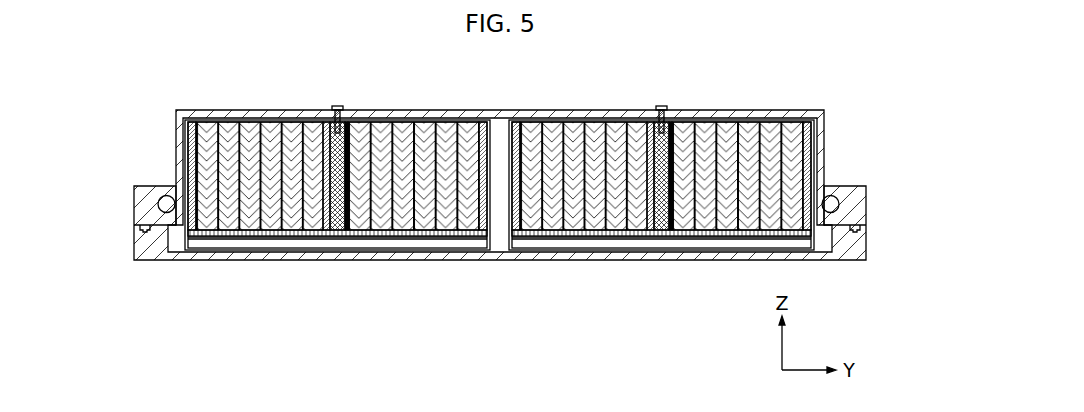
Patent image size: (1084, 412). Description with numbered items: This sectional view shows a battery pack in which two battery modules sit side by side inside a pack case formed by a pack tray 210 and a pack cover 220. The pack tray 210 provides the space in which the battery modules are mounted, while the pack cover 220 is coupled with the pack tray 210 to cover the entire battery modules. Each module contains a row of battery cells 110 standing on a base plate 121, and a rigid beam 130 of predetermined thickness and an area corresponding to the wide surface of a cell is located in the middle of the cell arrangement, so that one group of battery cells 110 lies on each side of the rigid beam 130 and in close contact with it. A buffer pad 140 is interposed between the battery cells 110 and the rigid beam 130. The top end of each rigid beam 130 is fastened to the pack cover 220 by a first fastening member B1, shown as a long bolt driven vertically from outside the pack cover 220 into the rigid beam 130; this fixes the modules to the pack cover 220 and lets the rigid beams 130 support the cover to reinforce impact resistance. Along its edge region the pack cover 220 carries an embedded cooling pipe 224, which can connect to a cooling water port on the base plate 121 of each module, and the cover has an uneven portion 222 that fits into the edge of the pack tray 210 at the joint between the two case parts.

The battery cell 110 is at (290, 130).
The base plate 121 is at (380, 242).
The rigid beam 130 is at (347, 130).
The buffer pad 140 is at (650, 137).
The first fastening member B1 is at (337, 106).
The pack tray 210 is at (499, 260).
The pack cover 220 is at (498, 110).
The uneven portion 222 is at (146, 226).
The cooling pipe 224 is at (164, 195).